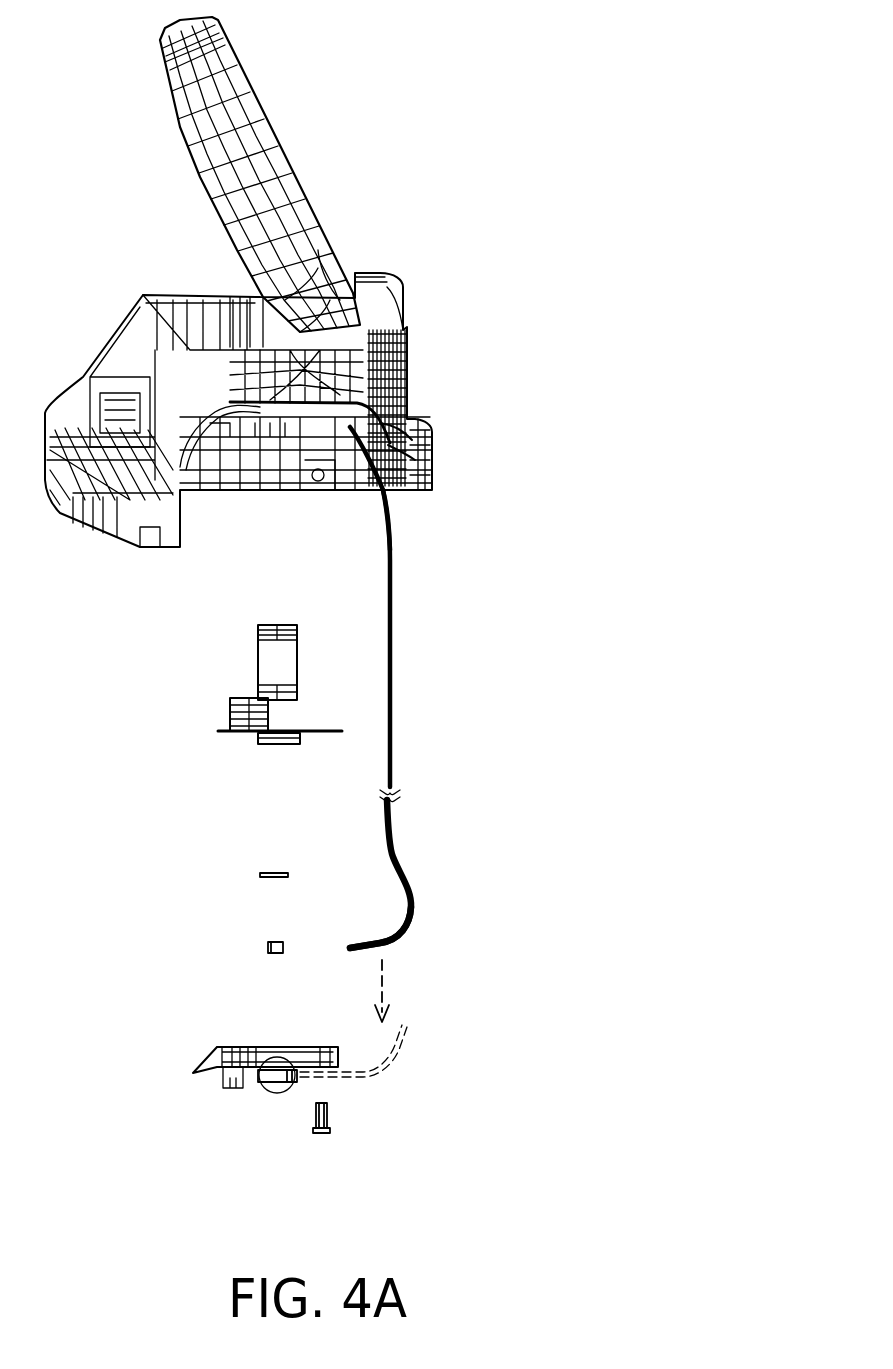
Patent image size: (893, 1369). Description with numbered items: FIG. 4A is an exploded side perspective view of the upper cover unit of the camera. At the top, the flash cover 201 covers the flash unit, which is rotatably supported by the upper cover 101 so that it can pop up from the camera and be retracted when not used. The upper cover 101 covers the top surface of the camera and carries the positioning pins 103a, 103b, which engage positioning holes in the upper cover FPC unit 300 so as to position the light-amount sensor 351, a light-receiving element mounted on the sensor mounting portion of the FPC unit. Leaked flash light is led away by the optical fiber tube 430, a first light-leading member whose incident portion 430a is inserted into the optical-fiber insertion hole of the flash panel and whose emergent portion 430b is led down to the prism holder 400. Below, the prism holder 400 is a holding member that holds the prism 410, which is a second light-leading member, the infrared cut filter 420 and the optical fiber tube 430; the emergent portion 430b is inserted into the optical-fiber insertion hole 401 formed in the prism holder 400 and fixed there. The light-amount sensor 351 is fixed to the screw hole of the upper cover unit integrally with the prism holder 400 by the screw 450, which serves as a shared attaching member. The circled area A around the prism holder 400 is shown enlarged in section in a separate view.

The flash cover 201 is at (268, 95).
The upper cover 101 is at (403, 400).
The positioning pin 103a is at (433, 443).
The positioning pin 103b is at (433, 460).
The optical fiber tube 430 is at (392, 593).
The incident portion 430a is at (380, 495).
The emergent portion 430b is at (413, 915).
The upper cover FPC unit 300 is at (287, 680).
The light-amount sensor 351 is at (285, 747).
The infrared cut filter 420 is at (288, 873).
The prism 410 is at (283, 944).
The prism holder 400 is at (340, 1057).
The optical-fiber insertion hole 401 is at (302, 1077).
The screw 450 is at (330, 1120).
The area A is at (258, 1099).